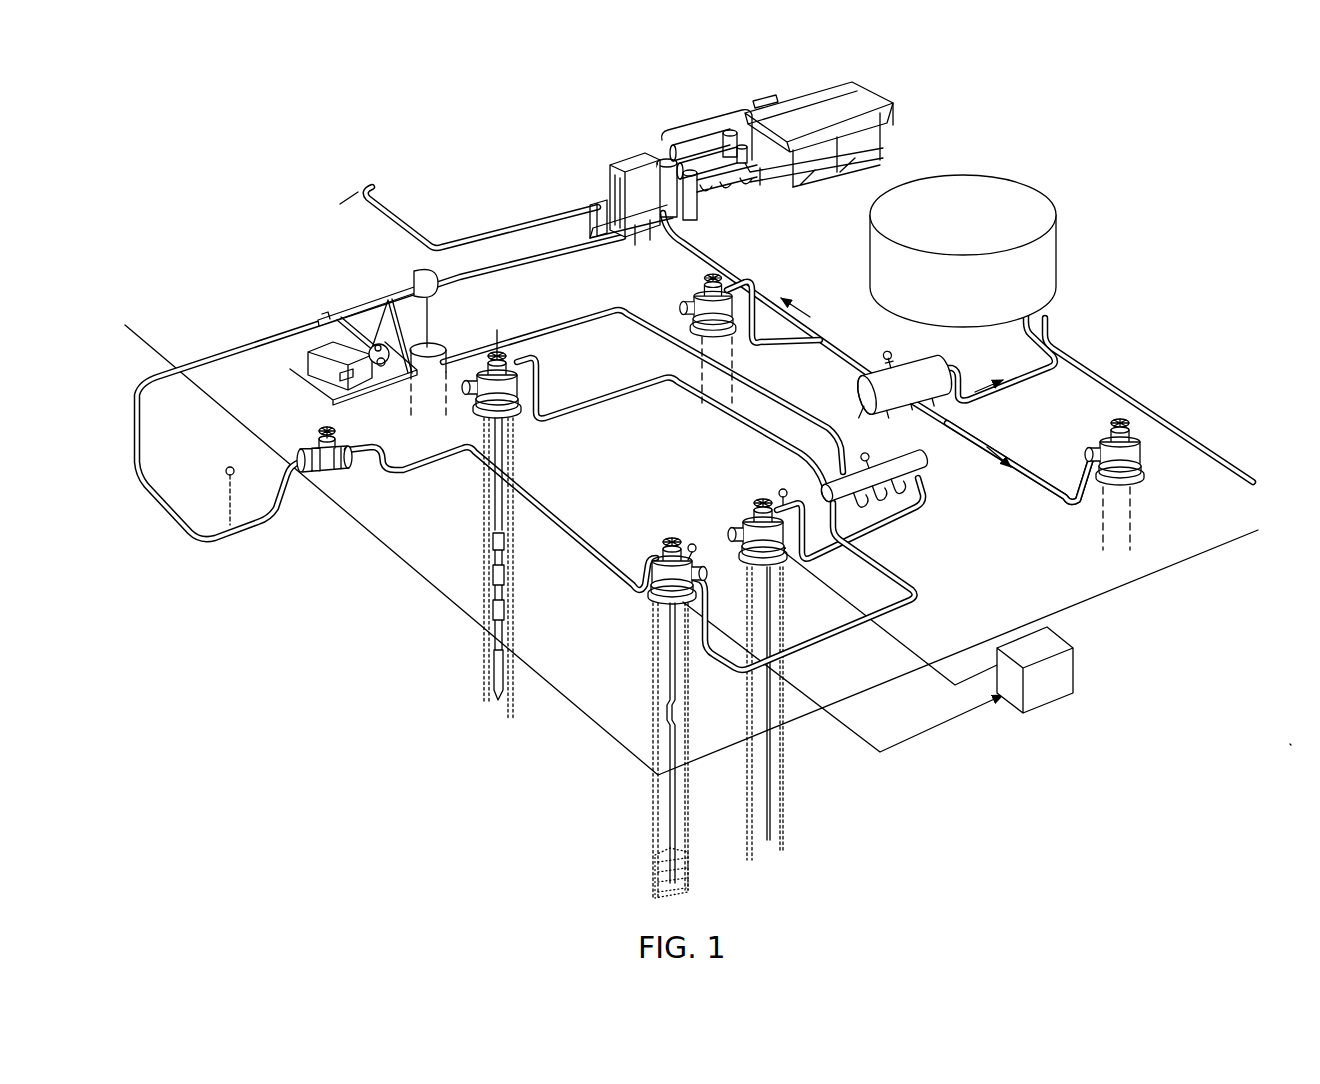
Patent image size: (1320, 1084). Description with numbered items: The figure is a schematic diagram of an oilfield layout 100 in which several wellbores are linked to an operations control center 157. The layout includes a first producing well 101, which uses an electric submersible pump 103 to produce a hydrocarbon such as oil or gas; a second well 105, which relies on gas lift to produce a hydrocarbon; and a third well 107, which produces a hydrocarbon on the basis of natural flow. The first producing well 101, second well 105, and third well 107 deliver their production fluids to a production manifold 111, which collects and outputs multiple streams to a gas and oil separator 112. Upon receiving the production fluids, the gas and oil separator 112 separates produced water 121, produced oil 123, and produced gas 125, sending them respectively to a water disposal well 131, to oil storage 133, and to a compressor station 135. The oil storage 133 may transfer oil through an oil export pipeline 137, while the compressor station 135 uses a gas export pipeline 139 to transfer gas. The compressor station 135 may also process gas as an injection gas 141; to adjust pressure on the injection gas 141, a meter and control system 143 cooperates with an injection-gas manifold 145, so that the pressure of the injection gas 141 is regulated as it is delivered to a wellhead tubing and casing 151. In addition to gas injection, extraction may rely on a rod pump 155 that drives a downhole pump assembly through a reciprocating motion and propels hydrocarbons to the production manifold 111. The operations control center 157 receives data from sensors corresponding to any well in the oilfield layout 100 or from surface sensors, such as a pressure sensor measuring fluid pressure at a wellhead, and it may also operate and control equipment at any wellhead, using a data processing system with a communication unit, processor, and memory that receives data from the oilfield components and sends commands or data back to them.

The oilfield layout 100 is at (1027, 113).
The first producing well 101 is at (460, 527).
The electric submersible pump 103 is at (494, 578).
The second well 105 is at (642, 822).
The third well 107 is at (799, 826).
The production manifold 111 is at (910, 461).
The gas and oil separator 112 is at (930, 372).
The produced water 121 is at (1007, 445).
The produced oil 123 is at (1030, 382).
The produced gas 125 is at (707, 253).
The water disposal well 131 is at (1100, 523).
The oil storage 133 is at (1010, 188).
The compressor station 135 is at (719, 111).
The oil export pipeline 137 is at (1130, 390).
The gas export pipeline 139 is at (497, 233).
The injection gas 141 is at (277, 333).
The meter and control system 143 is at (228, 467).
The injection-gas manifold 145 is at (325, 425).
The wellhead tubing and casing 151 is at (682, 545).
The rod pump 155 is at (357, 382).
The operations control center 157 is at (1060, 641).